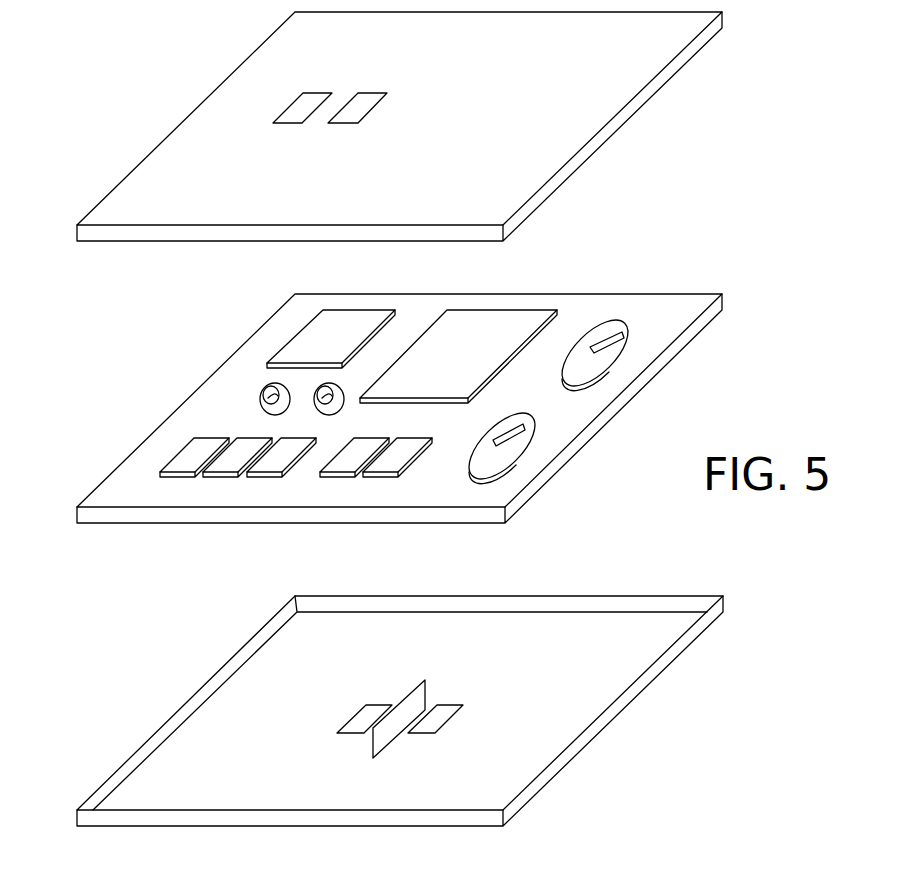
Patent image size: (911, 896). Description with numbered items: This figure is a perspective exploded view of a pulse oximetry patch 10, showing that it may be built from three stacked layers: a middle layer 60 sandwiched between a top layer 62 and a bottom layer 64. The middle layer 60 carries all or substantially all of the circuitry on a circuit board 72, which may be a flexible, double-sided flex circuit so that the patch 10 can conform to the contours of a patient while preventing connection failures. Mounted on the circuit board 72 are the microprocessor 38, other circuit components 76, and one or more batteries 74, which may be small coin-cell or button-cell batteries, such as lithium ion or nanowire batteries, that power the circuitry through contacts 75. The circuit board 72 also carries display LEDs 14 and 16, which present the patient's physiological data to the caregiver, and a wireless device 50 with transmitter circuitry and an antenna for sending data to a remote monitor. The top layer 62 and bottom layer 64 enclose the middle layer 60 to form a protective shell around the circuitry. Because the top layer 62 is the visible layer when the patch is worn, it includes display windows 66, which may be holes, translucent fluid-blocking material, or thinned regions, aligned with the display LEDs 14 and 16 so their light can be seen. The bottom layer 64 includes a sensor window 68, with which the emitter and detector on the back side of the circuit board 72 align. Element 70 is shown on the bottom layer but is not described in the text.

The pulse oximetry patch 10 is at (65, 845).
The display LED 14 is at (266, 391).
The display LED 16 is at (327, 390).
The microprocessor 38 is at (483, 322).
The wireless device 50 is at (347, 322).
The middle layer 60 is at (728, 357).
The top layer 62 is at (670, 124).
The bottom layer 64 is at (686, 710).
The display windows 66 is at (358, 100).
The sensor window 68 is at (357, 727).
The alignment tab 70 is at (413, 707).
The circuit board 72 is at (648, 308).
The batteries 74 is at (577, 366).
The contacts 75 is at (527, 432).
The circuit components 76 is at (260, 458).